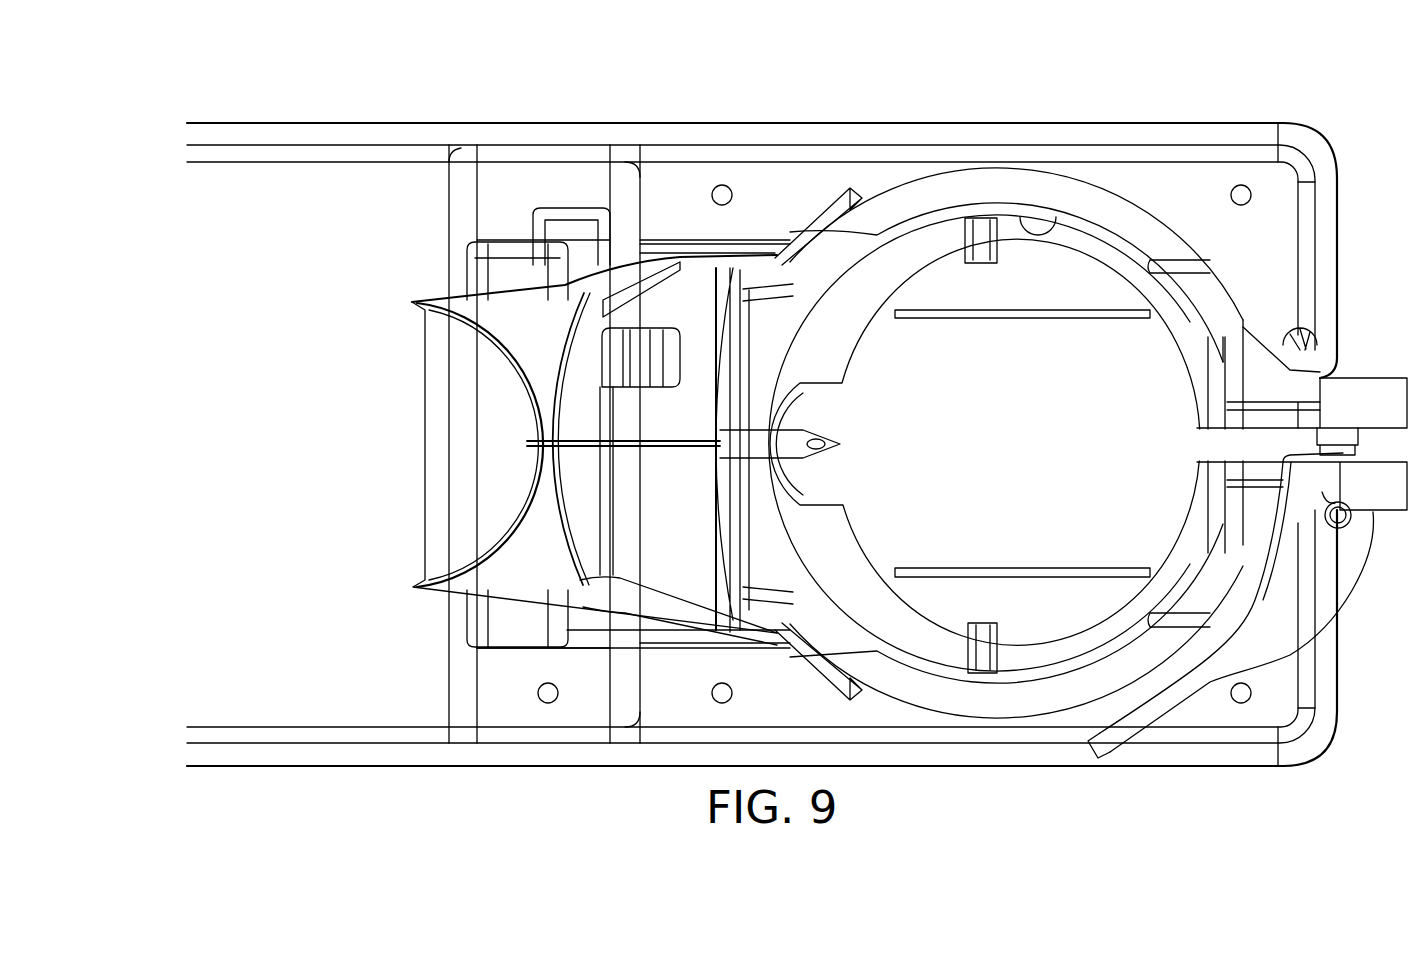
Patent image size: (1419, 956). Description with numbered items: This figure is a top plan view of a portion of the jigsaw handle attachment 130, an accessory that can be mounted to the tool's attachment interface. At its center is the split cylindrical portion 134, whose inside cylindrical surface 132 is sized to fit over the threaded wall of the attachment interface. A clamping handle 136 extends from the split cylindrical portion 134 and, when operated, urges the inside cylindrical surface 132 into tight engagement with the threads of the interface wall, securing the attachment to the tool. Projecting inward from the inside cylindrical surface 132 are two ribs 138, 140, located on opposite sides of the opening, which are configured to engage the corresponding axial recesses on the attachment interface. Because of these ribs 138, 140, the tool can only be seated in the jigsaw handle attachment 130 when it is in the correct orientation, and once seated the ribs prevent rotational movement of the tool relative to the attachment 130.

The jigsaw handle attachment 130 is at (1207, 78).
The inside cylindrical surface 132 is at (1052, 230).
The split cylindrical portion 134 is at (948, 193).
The clamping handle 136 is at (1305, 568).
The rib 138 is at (985, 640).
The rib 140 is at (980, 250).